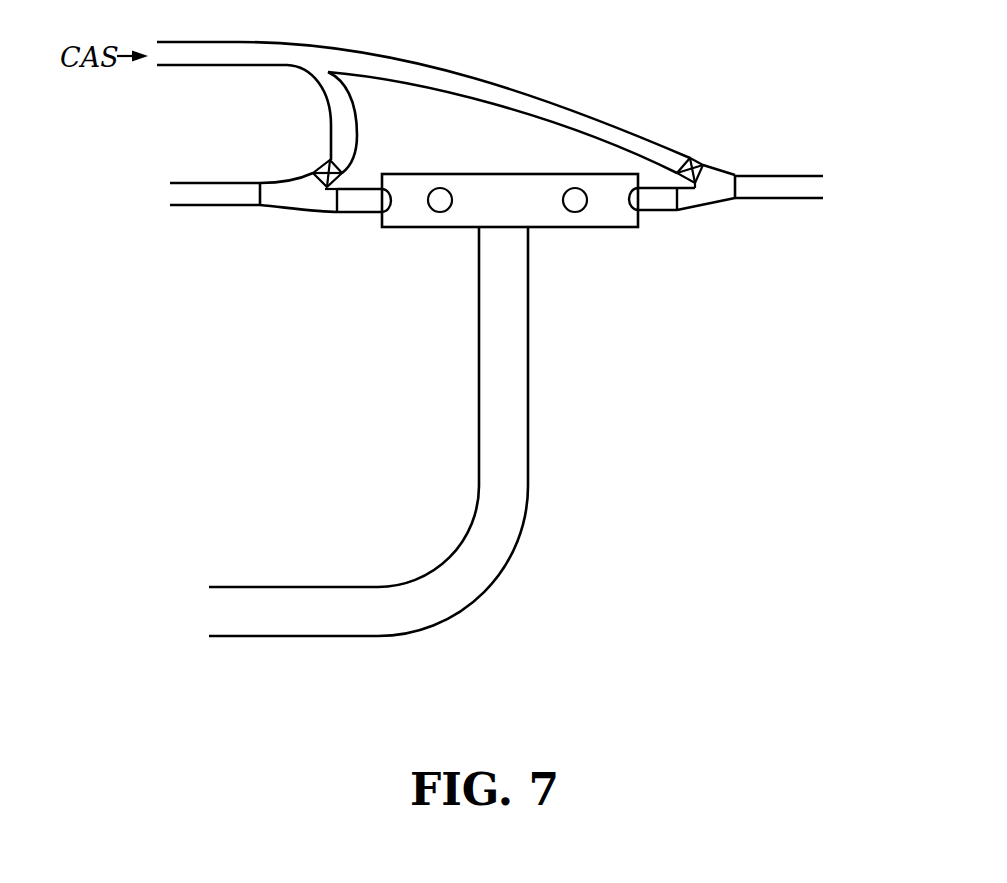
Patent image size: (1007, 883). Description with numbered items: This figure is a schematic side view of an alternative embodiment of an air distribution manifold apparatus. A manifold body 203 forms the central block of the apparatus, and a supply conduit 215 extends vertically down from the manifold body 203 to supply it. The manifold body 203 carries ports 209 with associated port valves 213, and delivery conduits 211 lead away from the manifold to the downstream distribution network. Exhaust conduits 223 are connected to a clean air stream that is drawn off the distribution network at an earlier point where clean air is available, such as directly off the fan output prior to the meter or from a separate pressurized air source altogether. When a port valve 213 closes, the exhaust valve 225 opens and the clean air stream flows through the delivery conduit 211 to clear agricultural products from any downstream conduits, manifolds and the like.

The manifold body 203 is at (583, 229).
The ports 209 is at (380, 217).
The delivery conduits 211 is at (213, 207).
The port valves 213 is at (678, 197).
The supply conduit 215 is at (530, 405).
The exhaust conduits 223 is at (482, 78).
The exhaust valve 225 is at (695, 158).